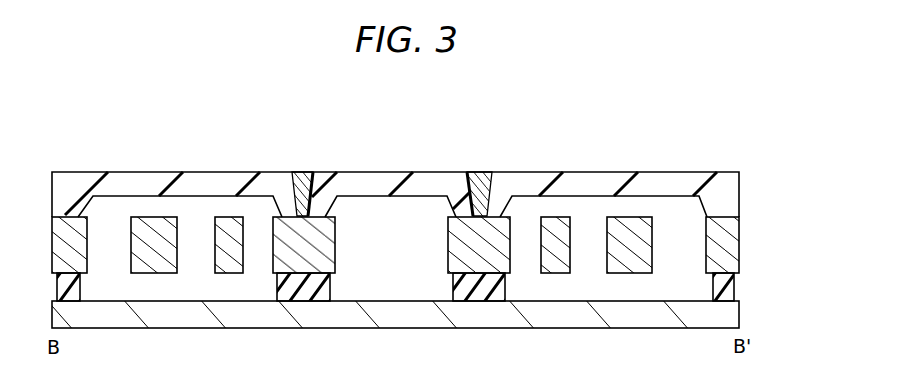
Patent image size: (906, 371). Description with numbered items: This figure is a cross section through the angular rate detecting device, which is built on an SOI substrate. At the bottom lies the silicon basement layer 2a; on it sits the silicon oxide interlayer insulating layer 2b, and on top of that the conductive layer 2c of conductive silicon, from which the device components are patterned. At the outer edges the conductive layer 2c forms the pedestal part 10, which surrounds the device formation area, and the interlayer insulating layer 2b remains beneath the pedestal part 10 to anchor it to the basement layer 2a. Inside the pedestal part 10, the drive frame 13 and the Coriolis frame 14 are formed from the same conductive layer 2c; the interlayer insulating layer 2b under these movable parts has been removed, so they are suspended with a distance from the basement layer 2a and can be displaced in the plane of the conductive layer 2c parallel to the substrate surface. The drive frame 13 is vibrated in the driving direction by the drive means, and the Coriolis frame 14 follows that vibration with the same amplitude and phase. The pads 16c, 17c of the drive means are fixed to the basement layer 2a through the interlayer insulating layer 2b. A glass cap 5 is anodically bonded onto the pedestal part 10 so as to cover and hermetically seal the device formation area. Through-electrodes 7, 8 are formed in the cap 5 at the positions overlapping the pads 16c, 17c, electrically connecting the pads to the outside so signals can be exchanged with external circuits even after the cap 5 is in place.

The basement layer 2a is at (734, 316).
The interlayer insulating layer 2b is at (753, 287).
The conductive layer 2c is at (753, 244).
The cap 5 is at (740, 193).
The through-electrode 7 is at (303, 185).
The through-electrode 8 is at (482, 185).
The pedestal part 10 is at (65, 215).
The drive frame 13 is at (228, 225).
The Coriolis frame 14 is at (150, 223).
The pad 16c is at (281, 222).
The pad 17c is at (455, 224).